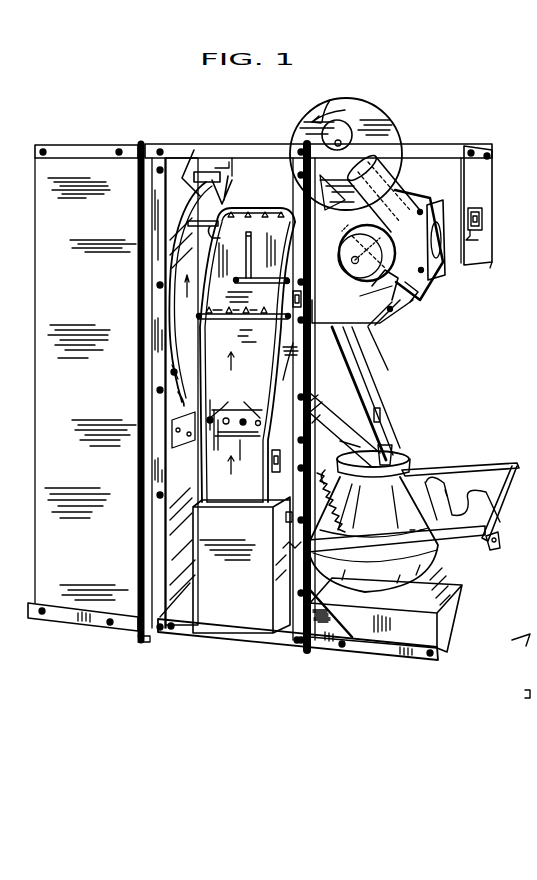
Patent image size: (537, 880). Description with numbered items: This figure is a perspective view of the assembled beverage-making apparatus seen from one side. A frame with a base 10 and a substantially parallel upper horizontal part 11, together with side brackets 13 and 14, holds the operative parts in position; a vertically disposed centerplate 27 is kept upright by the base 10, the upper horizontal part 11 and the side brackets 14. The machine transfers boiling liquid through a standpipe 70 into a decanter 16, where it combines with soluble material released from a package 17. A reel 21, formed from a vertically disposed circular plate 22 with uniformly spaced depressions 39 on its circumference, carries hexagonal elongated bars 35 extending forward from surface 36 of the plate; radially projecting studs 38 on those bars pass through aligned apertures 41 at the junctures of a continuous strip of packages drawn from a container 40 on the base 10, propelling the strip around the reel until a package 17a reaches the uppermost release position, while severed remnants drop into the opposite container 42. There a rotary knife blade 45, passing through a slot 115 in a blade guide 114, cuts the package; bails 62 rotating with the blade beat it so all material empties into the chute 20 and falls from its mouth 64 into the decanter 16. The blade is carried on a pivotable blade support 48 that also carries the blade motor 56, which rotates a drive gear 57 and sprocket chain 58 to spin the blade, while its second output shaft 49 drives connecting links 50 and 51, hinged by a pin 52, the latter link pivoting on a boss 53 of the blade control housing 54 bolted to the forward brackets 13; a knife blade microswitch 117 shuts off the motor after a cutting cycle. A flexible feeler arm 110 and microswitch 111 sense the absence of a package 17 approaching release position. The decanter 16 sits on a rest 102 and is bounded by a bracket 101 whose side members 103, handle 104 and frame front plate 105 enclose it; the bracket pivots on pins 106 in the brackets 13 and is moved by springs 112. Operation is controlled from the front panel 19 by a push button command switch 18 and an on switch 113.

The base 10 is at (97, 620).
The upper horizontal part 11 is at (89, 144).
The side brackets 13 is at (300, 379).
The side brackets 14 is at (149, 460).
The decanter 16 is at (375, 556).
The package 17 is at (240, 389).
The package at release position 17a is at (266, 209).
The push button command switch 18 is at (478, 243).
The front panel 19 is at (483, 203).
The chute 20 is at (348, 417).
The reel 21 is at (168, 400).
The circular plate 22 is at (172, 372).
The centerplate 27 is at (190, 480).
The elongated bars 35 is at (207, 232).
The surface of plate 36 is at (195, 352).
The studs 38 is at (240, 318).
The depressions 39 is at (204, 160).
The container 40 is at (227, 606).
The apertures 41 is at (234, 412).
The container 42 is at (273, 461).
The rotary knife blade 45 is at (390, 125).
The blade support 48 is at (362, 114).
The output shaft 49 is at (379, 286).
The connecting link 50 is at (360, 258).
The connecting link 51 is at (420, 292).
The pin 52 is at (426, 280).
The boss 53 is at (408, 307).
The blade control housing 54 is at (396, 313).
The blade motor 56 is at (346, 247).
The drive gear 57 is at (353, 225).
The sprocket chain 58 is at (394, 196).
The bails 62 is at (358, 104).
The mouth of chute 64 is at (378, 450).
The standpipe 70 is at (372, 380).
The bracket 101 is at (502, 451).
The rest 102 is at (460, 585).
The side members 103 is at (440, 463).
The handle 104 is at (498, 496).
The frame front plate 105 is at (289, 516).
The pins 106 is at (286, 558).
The flexible feeler arm 110 is at (254, 258).
The microswitch 111 is at (298, 303).
The springs 112 is at (338, 502).
The switch 113 is at (482, 222).
The blade guide 114 is at (239, 162).
The slot 115 is at (228, 188).
The knife blade microswitch 117 is at (513, 275).